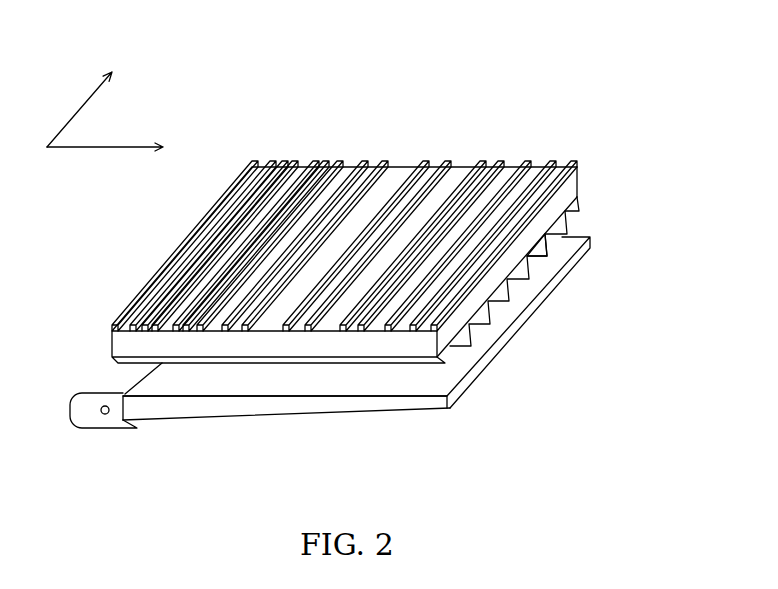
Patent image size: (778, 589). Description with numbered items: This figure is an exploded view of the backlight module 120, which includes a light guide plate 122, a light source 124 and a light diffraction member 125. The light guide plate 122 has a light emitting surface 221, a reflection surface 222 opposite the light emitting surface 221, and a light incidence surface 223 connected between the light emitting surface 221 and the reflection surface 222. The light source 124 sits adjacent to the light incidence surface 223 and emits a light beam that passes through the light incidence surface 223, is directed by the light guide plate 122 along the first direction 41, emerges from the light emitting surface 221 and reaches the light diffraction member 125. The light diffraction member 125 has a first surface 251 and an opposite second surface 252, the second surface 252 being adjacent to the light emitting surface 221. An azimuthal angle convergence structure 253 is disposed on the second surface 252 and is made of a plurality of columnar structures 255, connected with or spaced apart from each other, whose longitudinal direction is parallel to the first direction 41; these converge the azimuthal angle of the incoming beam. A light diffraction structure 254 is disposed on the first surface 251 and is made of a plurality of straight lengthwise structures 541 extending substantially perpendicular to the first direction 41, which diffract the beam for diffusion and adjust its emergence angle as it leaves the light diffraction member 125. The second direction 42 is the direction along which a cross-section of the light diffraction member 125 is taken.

The backlight module 120 is at (650, 26).
The first direction 41 is at (121, 150).
The second direction 42 is at (93, 99).
The light guide plate 122 is at (478, 368).
The light source 124 is at (105, 406).
The light diffraction member 125 is at (545, 222).
The light emitting surface 221 is at (448, 397).
The reflection surface 222 is at (451, 408).
The light incidence surface 223 is at (117, 400).
The first surface 251 is at (580, 168).
The second surface 252 is at (582, 193).
The azimuthal angle convergence structure 253 is at (530, 266).
The light diffraction structure 254 is at (338, 163).
The columnar structures 255 is at (509, 293).
The lengthwise structures 541 is at (548, 162).